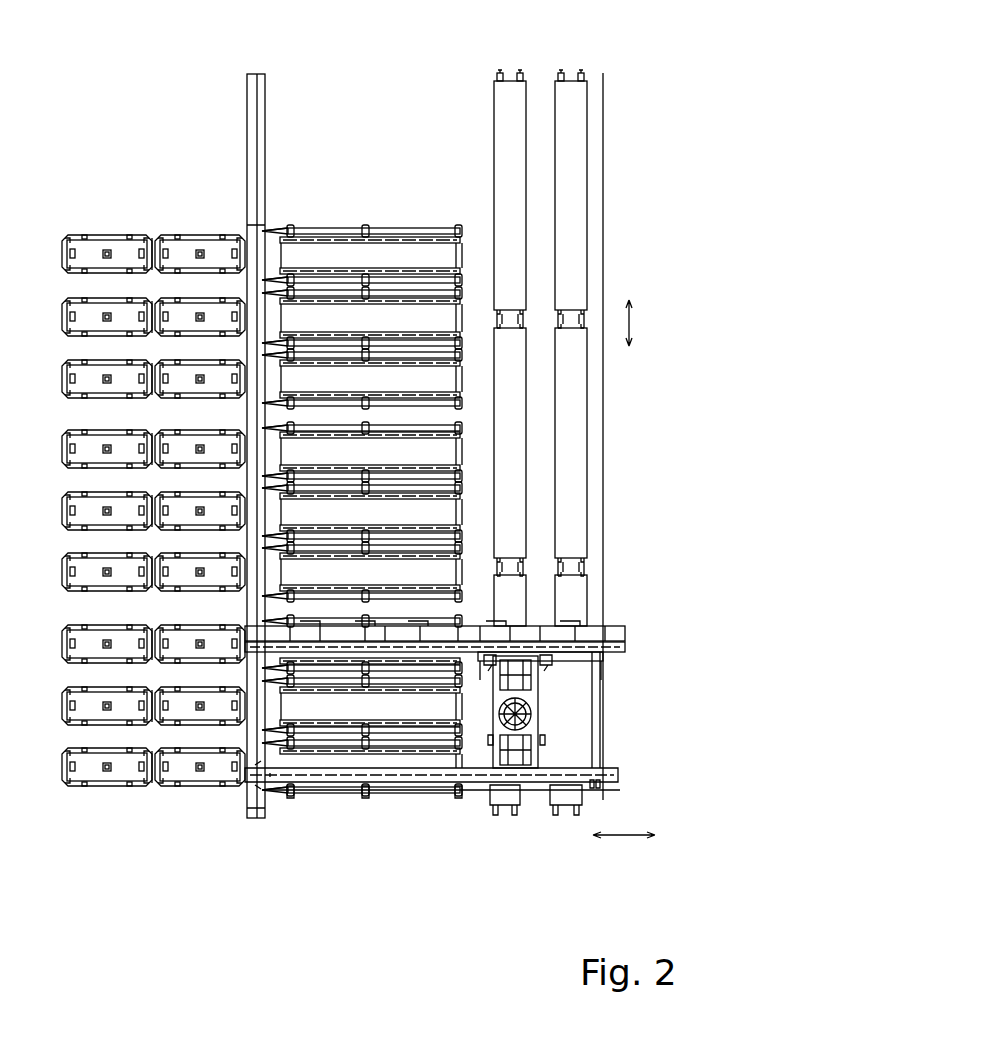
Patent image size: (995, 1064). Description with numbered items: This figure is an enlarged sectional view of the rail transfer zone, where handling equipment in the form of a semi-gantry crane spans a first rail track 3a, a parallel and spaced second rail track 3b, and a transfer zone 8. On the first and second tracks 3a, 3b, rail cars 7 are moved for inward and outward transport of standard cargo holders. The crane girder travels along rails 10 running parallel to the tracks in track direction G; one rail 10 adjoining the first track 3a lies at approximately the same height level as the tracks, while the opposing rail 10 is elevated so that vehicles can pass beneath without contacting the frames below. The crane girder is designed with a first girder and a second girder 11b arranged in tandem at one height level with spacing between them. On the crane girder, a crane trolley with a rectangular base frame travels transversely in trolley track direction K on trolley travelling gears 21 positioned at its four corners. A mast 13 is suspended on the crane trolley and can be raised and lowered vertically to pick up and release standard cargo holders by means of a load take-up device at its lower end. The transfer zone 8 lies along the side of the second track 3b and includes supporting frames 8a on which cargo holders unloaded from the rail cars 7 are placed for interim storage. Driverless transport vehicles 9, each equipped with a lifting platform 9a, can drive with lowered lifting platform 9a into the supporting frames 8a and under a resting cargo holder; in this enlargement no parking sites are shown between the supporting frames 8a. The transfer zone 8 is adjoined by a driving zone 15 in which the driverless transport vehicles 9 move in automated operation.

The driving zone 15 is at (60, 34).
The driverless transport vehicle 9 is at (128, 252).
The lifting platform 9a is at (183, 252).
The rail 10 is at (258, 95).
The supporting frame 8a is at (322, 262).
The transfer zone 8 is at (388, 183).
The second rail track 3b is at (518, 80).
The first rail track 3a is at (576, 80).
The rail car 7 is at (513, 242).
The second girder 11b is at (580, 642).
The trolley travelling gear 21 is at (552, 657).
The mast 13 is at (527, 716).